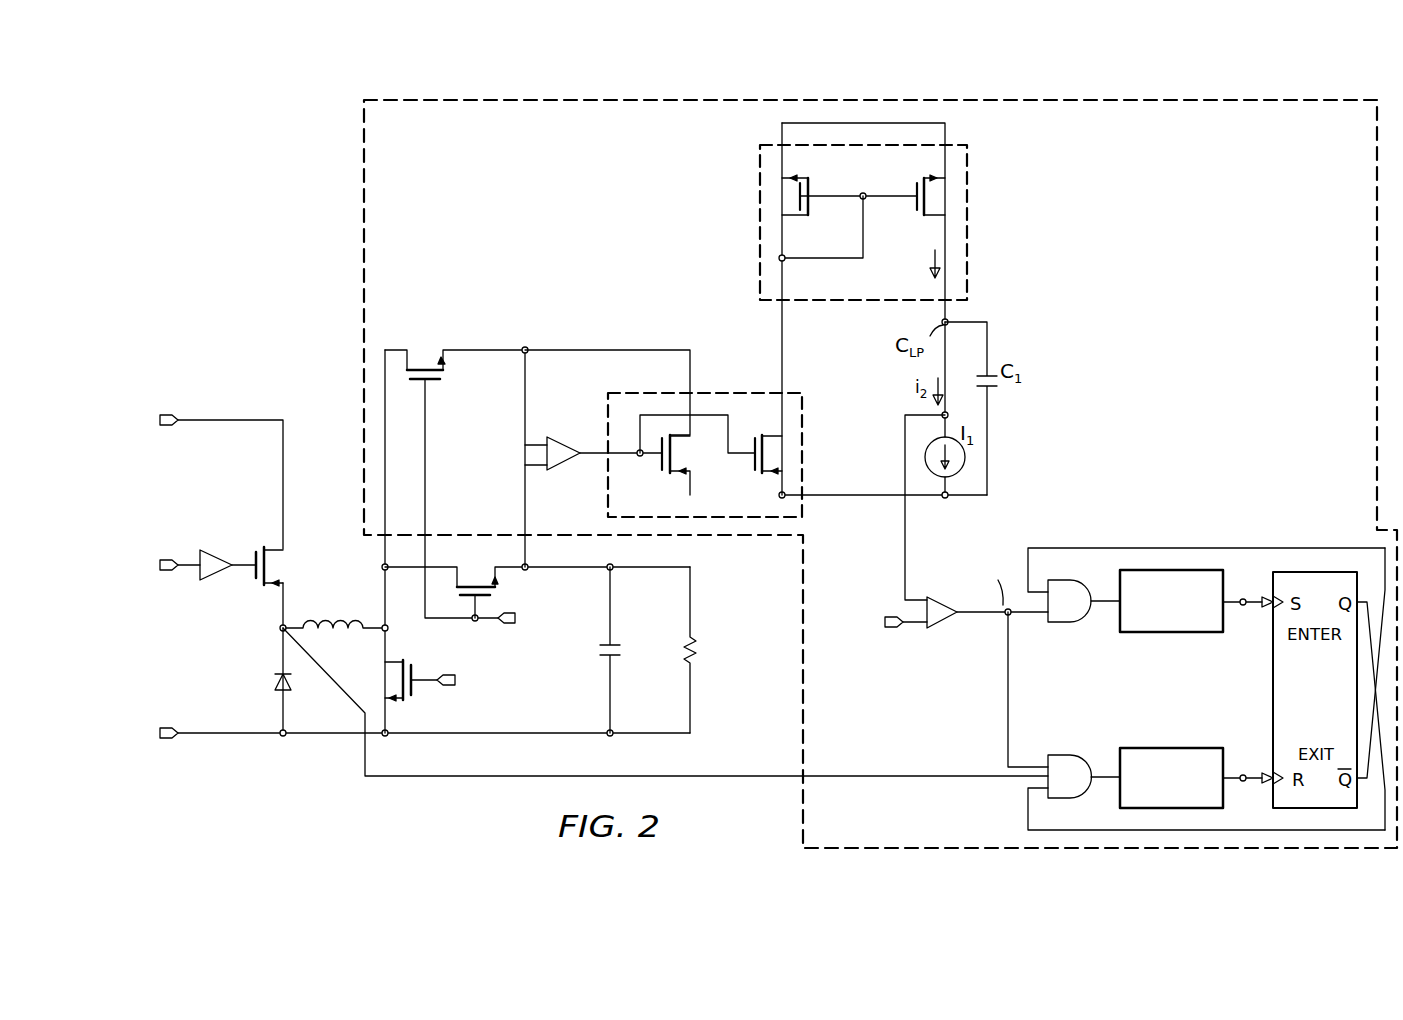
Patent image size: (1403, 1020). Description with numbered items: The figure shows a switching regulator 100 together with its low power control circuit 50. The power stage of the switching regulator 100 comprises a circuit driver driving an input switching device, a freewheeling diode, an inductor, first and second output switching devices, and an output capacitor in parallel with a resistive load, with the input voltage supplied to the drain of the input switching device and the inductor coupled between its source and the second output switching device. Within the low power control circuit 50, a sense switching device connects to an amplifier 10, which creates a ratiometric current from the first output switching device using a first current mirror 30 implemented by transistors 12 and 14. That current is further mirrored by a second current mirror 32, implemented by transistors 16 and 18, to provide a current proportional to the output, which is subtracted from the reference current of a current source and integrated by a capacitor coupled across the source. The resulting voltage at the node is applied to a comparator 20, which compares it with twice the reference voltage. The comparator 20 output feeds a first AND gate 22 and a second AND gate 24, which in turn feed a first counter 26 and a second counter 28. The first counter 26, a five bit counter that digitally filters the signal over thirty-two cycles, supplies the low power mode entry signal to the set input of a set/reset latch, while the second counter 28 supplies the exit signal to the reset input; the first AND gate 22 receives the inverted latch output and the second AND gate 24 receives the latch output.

The switching regulator 100 is at (267, 275).
The low power control circuit 50 is at (1113, 103).
The amplifier 10 is at (565, 437).
The first current mirror 30 is at (727, 391).
The transistor 12 is at (661, 462).
The transistor 14 is at (753, 462).
The second current mirror 32 is at (968, 205).
The transistor 16 is at (815, 185).
The transistor 18 is at (912, 208).
The comparator 20 is at (938, 626).
The first AND gate 22 is at (1068, 625).
The second AND gate 24 is at (1068, 755).
The first counter 26 is at (1170, 633).
The second counter 28 is at (1170, 748).